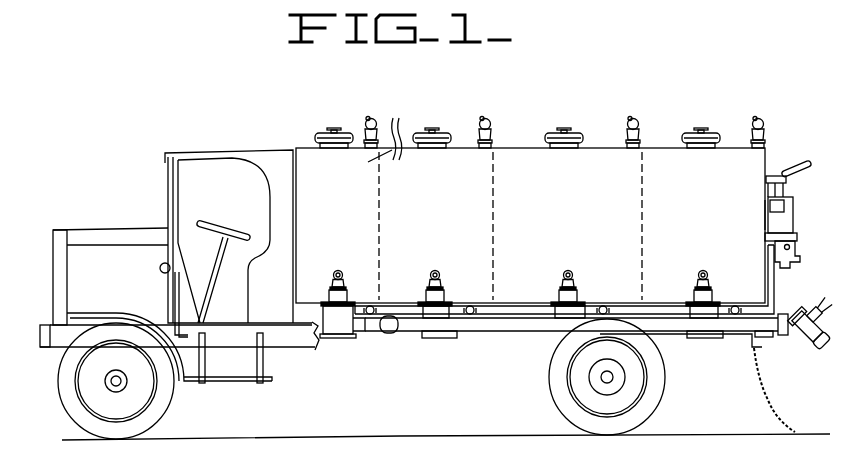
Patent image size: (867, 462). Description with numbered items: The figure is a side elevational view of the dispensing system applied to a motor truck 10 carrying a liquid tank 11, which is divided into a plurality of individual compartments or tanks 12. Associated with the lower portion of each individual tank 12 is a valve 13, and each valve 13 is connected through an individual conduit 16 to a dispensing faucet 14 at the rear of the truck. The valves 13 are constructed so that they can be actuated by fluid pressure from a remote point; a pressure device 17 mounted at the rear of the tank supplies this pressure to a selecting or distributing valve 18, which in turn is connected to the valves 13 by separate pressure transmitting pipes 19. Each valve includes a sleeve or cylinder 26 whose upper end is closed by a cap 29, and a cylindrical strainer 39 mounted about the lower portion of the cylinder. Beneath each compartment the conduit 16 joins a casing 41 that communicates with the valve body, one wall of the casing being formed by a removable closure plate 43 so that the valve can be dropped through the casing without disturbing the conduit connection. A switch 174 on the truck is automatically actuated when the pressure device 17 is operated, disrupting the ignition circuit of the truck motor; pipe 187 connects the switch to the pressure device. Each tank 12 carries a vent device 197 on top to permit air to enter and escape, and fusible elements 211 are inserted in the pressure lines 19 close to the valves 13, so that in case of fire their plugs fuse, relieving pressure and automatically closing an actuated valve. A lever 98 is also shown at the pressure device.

The motor truck 10 is at (118, 230).
The liquid tank 11 is at (513, 143).
The individual compartment or tank 12 is at (392, 132).
The valve 13 is at (346, 287).
The dispensing faucet 14 is at (800, 337).
The conduit 16 is at (517, 325).
The pressure device 17 is at (790, 207).
The selecting or distributing valve 18 is at (797, 243).
The pressure transmitting pipe 19 is at (507, 312).
The sleeve or cylinder 26 is at (712, 288).
The cap 29 is at (444, 287).
The cylindrical strainer 39 is at (585, 294).
The casing 41 is at (337, 328).
The closure plate 43 is at (440, 339).
The valve lever 98 is at (804, 162).
The switch 174 is at (160, 268).
The pipe 187 is at (176, 296).
The vent device 197 is at (487, 125).
The fusible element 211 is at (373, 309).